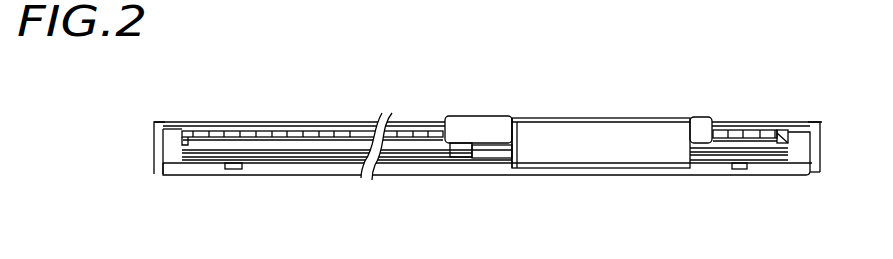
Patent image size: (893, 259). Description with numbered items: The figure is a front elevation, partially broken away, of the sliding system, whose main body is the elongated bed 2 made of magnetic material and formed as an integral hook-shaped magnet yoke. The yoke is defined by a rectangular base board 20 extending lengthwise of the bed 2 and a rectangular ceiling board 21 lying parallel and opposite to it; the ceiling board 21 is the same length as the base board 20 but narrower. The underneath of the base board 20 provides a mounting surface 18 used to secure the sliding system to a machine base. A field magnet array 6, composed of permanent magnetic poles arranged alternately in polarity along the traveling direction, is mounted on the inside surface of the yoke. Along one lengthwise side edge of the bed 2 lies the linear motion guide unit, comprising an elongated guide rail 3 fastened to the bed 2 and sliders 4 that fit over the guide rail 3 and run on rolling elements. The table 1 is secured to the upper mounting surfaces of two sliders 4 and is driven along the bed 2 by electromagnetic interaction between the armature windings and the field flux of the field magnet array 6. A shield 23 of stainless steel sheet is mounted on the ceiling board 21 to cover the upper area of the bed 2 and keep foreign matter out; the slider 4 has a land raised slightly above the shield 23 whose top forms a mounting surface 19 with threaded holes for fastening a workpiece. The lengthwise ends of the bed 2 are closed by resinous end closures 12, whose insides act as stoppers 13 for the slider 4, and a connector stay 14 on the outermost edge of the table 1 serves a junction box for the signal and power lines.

The table 1 is at (484, 124).
The bed 2 is at (738, 124).
The guide rail 3 is at (413, 158).
The slider 4 is at (498, 150).
The field magnet array 6 is at (408, 130).
The end closure 12 is at (161, 150).
The stopper 13 is at (781, 130).
The connector stay 14 is at (605, 158).
The mounting surface 18 is at (449, 176).
The mounting surface 19 is at (511, 118).
The base board 20 is at (278, 176).
The ceiling board 21 is at (339, 122).
The shield 23 is at (271, 120).